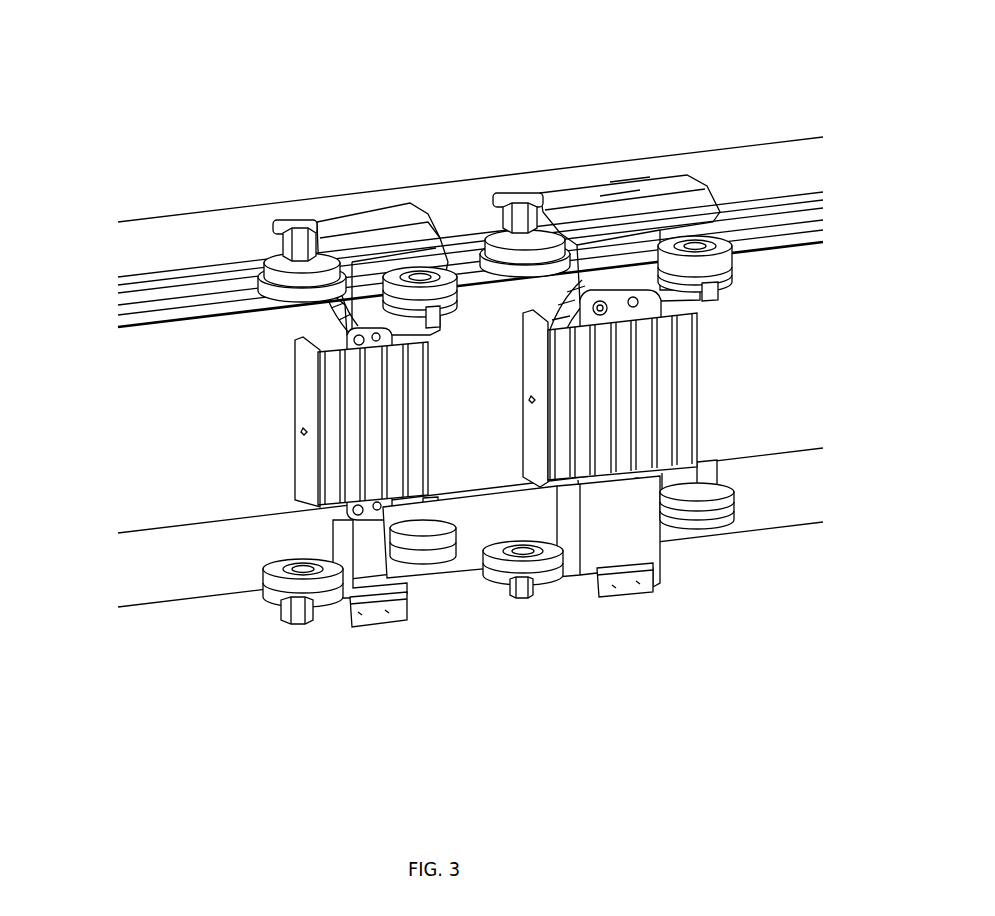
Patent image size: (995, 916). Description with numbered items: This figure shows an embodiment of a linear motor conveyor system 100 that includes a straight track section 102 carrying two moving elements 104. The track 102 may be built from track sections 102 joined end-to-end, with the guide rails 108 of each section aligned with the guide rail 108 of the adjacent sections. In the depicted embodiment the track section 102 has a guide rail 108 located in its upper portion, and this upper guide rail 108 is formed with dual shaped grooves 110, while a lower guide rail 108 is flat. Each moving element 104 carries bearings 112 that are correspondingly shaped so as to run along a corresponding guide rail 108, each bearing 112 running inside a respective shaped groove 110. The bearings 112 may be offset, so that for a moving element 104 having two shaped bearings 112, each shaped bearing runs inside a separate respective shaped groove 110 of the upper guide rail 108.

The linear motor conveyor system 100 is at (333, 714).
The track section 102 is at (199, 149).
The moving element 104 is at (353, 440).
The guide rail 108 is at (118, 298).
The shaped groove 110 is at (267, 295).
The bearing 112 is at (723, 272).